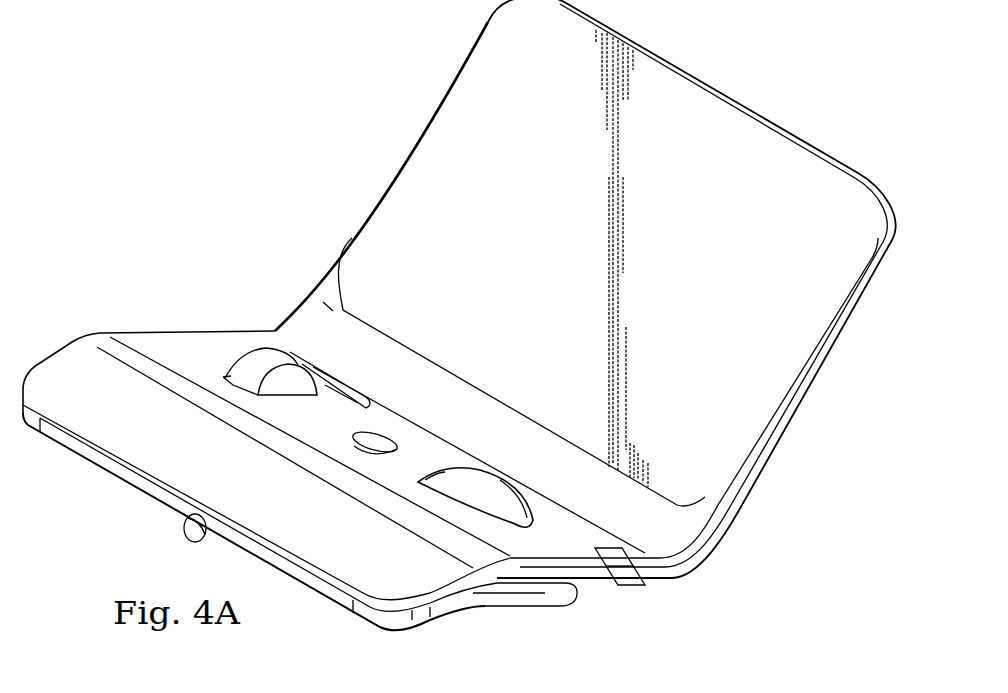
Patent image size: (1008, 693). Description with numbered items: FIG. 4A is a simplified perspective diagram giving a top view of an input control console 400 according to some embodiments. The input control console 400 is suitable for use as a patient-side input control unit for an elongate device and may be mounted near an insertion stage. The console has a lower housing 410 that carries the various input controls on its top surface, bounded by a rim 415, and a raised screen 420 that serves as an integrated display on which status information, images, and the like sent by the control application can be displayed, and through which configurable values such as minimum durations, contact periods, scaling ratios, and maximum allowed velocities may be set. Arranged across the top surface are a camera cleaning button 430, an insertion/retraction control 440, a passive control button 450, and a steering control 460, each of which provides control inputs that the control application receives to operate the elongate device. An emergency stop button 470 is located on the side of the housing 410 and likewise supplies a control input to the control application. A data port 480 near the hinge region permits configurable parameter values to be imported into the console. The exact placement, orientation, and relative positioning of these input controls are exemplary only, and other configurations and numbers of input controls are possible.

The input control console 400 is at (232, 161).
The base housing 410 is at (190, 333).
The rim of base housing 415 is at (110, 347).
The screen 420 is at (433, 108).
The camera cleaning button 430 is at (347, 382).
The insertion/retraction control 440 is at (293, 352).
The passive control button 450 is at (383, 432).
The steering control 460 is at (495, 473).
The emergency stop button 470 is at (188, 535).
The data port 480 is at (628, 580).